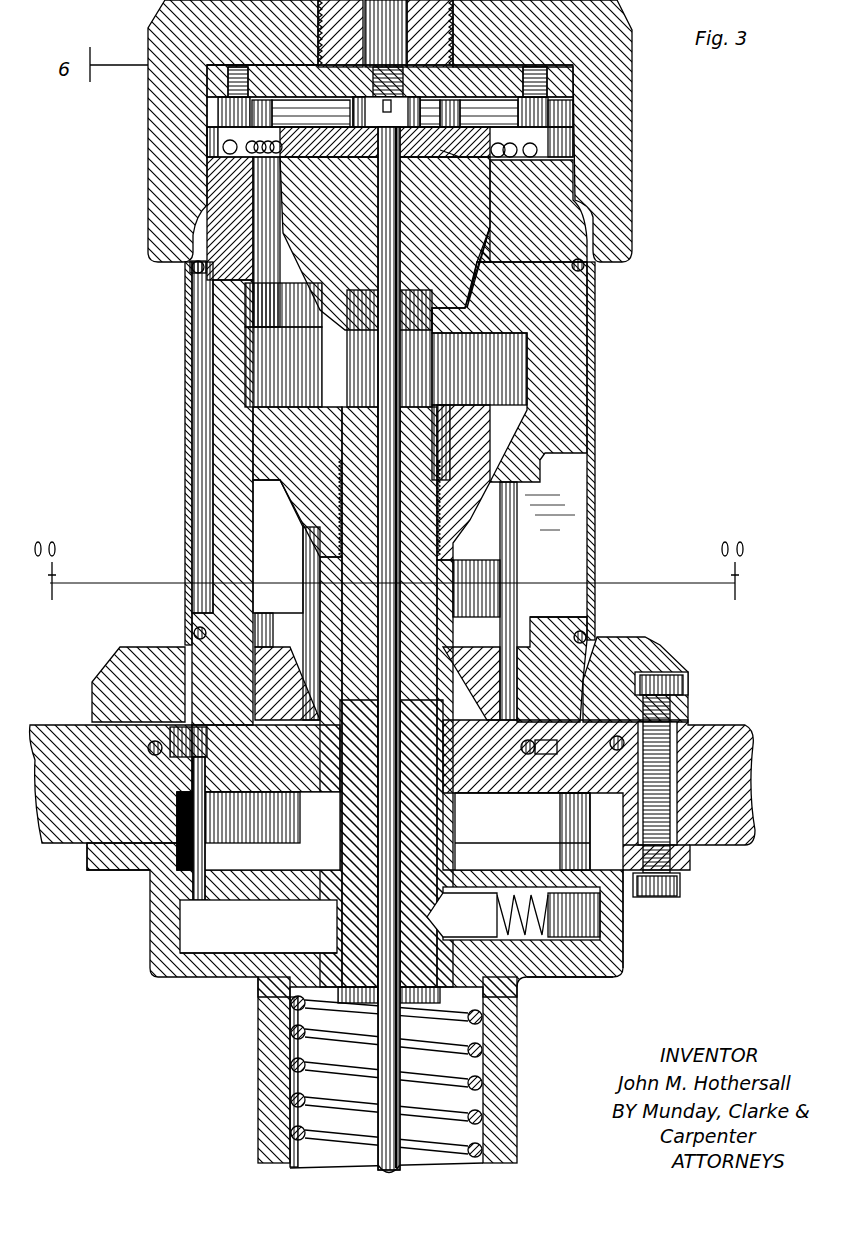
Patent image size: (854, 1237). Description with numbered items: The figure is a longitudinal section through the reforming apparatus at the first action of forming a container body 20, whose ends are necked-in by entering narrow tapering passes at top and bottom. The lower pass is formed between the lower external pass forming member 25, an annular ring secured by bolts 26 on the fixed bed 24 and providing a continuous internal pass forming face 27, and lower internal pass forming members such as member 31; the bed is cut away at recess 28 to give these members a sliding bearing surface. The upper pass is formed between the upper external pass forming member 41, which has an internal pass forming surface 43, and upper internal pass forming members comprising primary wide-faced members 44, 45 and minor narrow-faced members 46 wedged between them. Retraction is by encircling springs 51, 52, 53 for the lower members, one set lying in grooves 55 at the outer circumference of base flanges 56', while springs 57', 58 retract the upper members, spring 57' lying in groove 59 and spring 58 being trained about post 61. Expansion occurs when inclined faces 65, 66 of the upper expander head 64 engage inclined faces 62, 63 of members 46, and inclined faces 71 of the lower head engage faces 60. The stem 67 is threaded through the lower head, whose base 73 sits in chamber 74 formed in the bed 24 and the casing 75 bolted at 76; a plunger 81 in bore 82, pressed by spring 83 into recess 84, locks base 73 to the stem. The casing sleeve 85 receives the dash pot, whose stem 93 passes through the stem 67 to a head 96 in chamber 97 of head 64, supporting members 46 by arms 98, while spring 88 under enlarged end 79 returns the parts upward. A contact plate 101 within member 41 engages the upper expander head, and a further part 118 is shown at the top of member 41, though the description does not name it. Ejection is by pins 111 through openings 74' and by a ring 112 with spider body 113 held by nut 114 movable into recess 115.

The body 20 is at (597, 473).
The bed 24 is at (723, 747).
The lower external pass forming member 25 is at (603, 663).
The bolts 26 is at (658, 687).
The internal pass forming face 27 is at (590, 663).
The recess 28 is at (143, 743).
The lower internal pass forming member 31 is at (237, 502).
The upper external pass forming member 41 is at (613, 98).
The internal pass forming surface 43 is at (583, 217).
The primary upper internal pass forming member 44 is at (552, 745).
The primary upper internal pass forming member 45 is at (200, 408).
The minor upper internal pass forming member 46 is at (560, 368).
The encircling spring 51 is at (192, 632).
The encircling spring 52 is at (625, 748).
The encircling spring 53 is at (250, 780).
The grooves 55 is at (650, 783).
The base flanges 56' is at (694, 861).
The encircling spring 57' is at (220, 242).
The encircling spring 58 is at (218, 147).
The groove 59 is at (597, 295).
The inclined faces 60 is at (585, 683).
The post 61 is at (533, 137).
The inclined face 62 is at (590, 260).
The inclined face 63 is at (517, 427).
The upper expander head 64 is at (190, 262).
The inclined face 65 is at (470, 280).
The inclined face 66 is at (465, 525).
The stem 67 is at (200, 970).
The inclined faces 71 is at (465, 770).
The base 73 is at (185, 950).
The chamber 74 is at (652, 919).
The openings 74' is at (117, 870).
The casing 75 is at (180, 900).
The bolts 76 is at (663, 885).
The enlarged end 79 is at (320, 990).
The plunger 81 is at (478, 920).
The bore 82 is at (525, 890).
The spring 83 is at (562, 978).
The recess 84 is at (255, 970).
The sleeve 85 is at (500, 1068).
The spring 88 is at (305, 1095).
The stem 93 is at (392, 1025).
The head 96 is at (373, 352).
The chamber 97 is at (315, 300).
The arm 98 is at (533, 350).
The contact plate 101 is at (205, 190).
The pins 111 is at (200, 918).
The ring 112 is at (205, 123).
The spider body 113 is at (215, 95).
The nut 114 is at (357, 158).
The recess 115 is at (440, 150).
The ring 118 is at (150, 27).